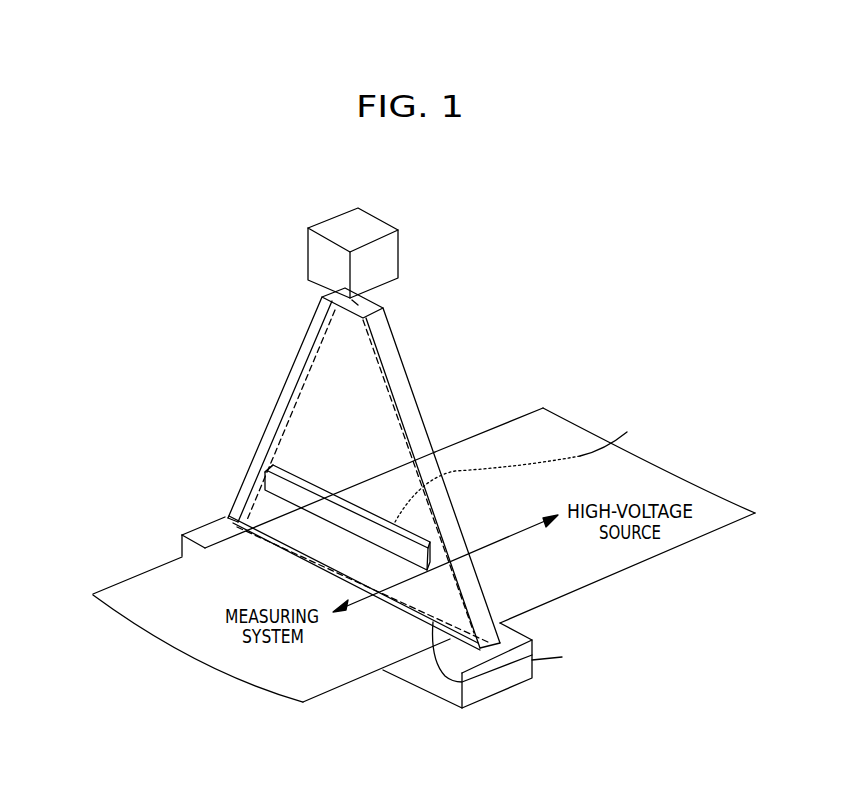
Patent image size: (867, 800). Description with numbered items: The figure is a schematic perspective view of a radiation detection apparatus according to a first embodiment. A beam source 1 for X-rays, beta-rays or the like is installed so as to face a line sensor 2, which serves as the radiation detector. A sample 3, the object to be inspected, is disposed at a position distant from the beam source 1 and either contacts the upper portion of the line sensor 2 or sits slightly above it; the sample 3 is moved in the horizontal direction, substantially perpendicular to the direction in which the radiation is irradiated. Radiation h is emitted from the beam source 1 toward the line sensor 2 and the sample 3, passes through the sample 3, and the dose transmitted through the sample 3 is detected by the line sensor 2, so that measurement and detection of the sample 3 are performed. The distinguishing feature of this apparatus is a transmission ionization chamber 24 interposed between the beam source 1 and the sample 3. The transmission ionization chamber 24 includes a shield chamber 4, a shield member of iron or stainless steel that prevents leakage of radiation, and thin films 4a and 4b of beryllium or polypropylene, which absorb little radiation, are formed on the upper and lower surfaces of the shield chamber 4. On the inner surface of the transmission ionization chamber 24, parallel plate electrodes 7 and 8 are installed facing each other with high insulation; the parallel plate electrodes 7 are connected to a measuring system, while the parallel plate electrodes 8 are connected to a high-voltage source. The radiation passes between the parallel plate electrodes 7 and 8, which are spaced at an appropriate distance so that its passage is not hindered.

The beam source 1 is at (372, 230).
The line sensor 2 is at (412, 683).
The sample 3 is at (122, 617).
The shield chamber 4 is at (418, 413).
The thin film 4a is at (372, 310).
The thin film 4b is at (533, 662).
The parallel plate electrode 7 is at (242, 483).
The parallel plate electrode 8 is at (516, 465).
The transmission ionization chamber 24 is at (275, 360).
The radiation h is at (390, 608).